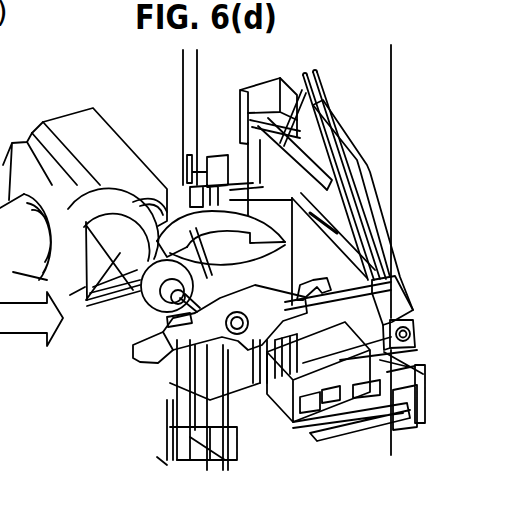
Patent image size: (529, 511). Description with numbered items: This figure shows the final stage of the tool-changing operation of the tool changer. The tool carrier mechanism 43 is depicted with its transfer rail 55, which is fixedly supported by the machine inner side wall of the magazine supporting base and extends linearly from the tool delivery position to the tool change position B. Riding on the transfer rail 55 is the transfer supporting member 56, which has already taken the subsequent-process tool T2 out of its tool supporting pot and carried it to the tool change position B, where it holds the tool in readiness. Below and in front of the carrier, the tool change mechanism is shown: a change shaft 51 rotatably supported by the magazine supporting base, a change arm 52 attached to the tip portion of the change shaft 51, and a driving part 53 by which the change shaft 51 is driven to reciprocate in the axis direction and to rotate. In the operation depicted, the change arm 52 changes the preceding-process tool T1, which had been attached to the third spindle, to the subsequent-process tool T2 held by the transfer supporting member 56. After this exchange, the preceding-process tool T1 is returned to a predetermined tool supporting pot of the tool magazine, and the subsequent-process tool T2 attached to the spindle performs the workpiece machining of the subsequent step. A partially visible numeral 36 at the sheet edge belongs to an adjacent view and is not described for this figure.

The driving part 53 is at (58, 113).
The tool carrier mechanism 43 is at (378, 172).
The transfer rail 55 is at (323, 207).
The subsequent-process tool T2 is at (290, 253).
The transfer supporting member 56 is at (425, 365).
The preceding-process tool T1 is at (78, 290).
The tool change position B is at (135, 390).
The change arm 52 is at (220, 335).
The change shaft 51 is at (222, 402).
The roller 36 is at (8, 392).